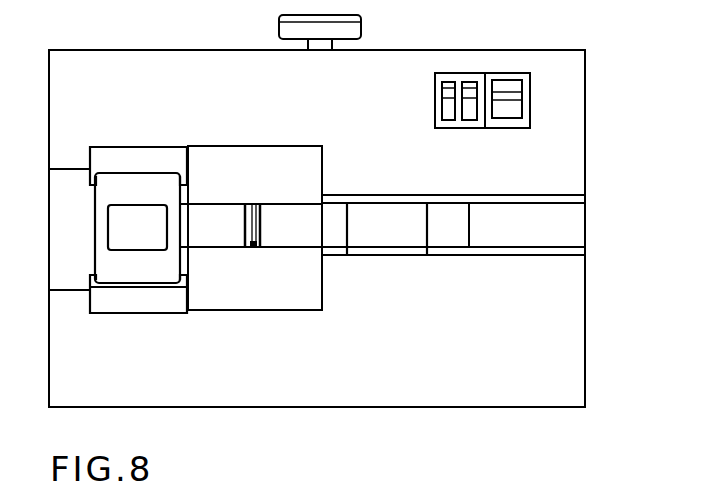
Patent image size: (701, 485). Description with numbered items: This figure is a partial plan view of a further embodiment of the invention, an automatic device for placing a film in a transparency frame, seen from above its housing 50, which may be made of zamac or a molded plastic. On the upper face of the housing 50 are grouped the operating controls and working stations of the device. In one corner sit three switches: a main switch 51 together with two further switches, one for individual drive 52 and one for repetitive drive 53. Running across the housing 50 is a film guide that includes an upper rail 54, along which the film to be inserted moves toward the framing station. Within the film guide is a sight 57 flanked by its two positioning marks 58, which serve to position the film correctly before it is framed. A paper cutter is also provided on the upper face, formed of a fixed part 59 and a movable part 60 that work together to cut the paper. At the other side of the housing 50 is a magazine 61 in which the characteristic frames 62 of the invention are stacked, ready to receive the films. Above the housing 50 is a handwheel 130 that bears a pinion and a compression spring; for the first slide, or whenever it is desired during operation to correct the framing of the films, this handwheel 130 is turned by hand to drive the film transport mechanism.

The housing 50 is at (193, 377).
The handwheel 130 is at (286, 28).
The main switch 51 is at (507, 80).
The switch for individual drive 52 is at (469, 82).
The switch for repetitive drive 53 is at (449, 82).
The upper rail 54 is at (530, 230).
The sight 57 is at (392, 230).
The positioning marks 58 is at (347, 255).
The fixed part 59 is at (256, 247).
The movable part 60 is at (251, 247).
The magazine 61 is at (130, 290).
The frames 62 is at (105, 266).